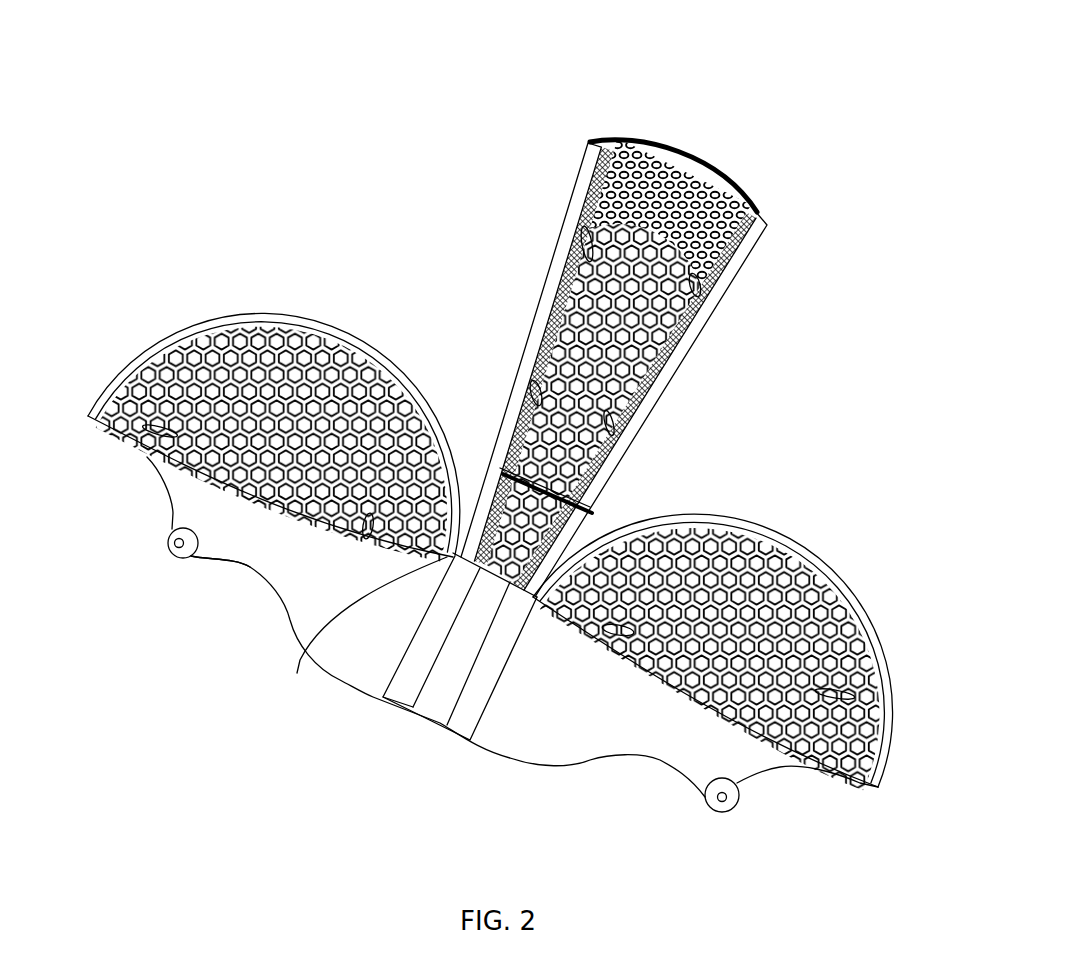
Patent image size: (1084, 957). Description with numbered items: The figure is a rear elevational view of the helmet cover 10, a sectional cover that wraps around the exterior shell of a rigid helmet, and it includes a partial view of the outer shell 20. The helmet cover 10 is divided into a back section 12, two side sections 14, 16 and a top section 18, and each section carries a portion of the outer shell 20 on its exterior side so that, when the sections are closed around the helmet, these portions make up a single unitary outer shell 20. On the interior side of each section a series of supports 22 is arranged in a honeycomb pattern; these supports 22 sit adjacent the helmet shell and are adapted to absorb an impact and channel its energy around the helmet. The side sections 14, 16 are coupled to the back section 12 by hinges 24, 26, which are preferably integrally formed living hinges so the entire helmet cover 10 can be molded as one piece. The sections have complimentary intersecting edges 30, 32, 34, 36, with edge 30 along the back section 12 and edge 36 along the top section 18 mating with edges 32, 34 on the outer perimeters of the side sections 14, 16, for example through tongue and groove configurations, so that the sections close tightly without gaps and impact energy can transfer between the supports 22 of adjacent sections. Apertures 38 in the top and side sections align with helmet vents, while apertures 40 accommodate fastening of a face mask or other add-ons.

The helmet cover 10 is at (800, 57).
The back section 12 is at (300, 666).
The side section 14 is at (727, 630).
The side section 16 is at (274, 400).
The top section 18 is at (622, 368).
The outer shell 20 is at (250, 550).
The supports 22 is at (168, 432).
The hinge 24 is at (478, 708).
The hinge 26 is at (403, 678).
The intersecting edge 30 is at (490, 494).
The intersecting edge 32 is at (783, 538).
The intersecting edge 34 is at (381, 352).
The intersecting edge 36 is at (582, 190).
The apertures 38 is at (367, 520).
The apertures 40 is at (168, 547).